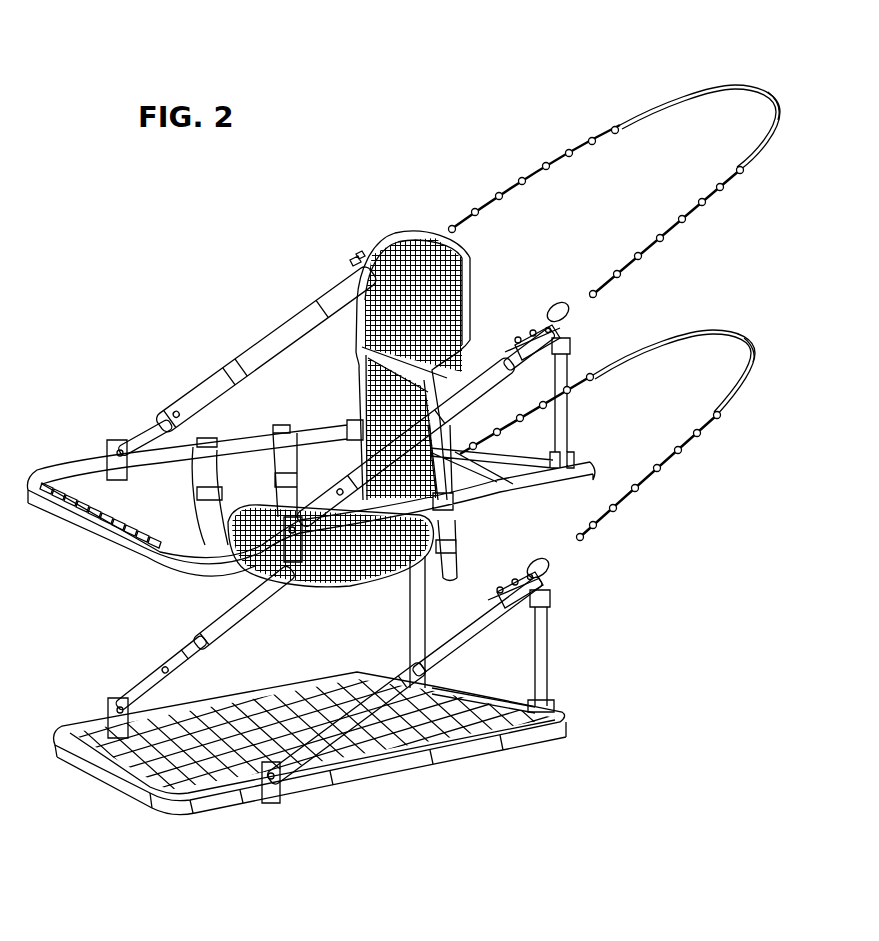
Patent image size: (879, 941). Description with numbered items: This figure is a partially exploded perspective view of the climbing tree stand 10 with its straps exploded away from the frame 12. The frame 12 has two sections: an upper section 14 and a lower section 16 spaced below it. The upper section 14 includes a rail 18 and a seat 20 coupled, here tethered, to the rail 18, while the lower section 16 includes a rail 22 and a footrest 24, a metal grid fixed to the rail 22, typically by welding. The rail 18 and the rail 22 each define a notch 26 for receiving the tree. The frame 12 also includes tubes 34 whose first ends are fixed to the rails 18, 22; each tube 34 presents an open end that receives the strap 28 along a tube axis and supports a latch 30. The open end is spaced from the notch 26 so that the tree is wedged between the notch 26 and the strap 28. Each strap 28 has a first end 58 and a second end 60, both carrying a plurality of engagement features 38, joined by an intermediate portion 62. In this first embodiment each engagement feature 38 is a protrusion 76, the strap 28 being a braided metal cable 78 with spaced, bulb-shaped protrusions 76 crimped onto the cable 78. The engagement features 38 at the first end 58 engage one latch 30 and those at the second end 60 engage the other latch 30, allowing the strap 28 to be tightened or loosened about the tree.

The tree stand 10 is at (292, 255).
The frame 12 is at (60, 735).
The upper section 14 is at (80, 468).
The lower section 16 is at (133, 795).
The rail 18 is at (65, 522).
The seat 20 is at (405, 228).
The rail 22 is at (190, 805).
The footrest 24 is at (235, 800).
The notch 26 is at (512, 452).
The strap 28 is at (727, 78).
The latch 30 is at (565, 331).
The tube 34 is at (280, 334).
The engagement feature 38 is at (614, 326).
The first end 58 is at (516, 207).
The second end 60 is at (658, 228).
The intermediate portion 62 is at (763, 86).
The protrusion 76 is at (592, 140).
The cable 78 is at (672, 100).